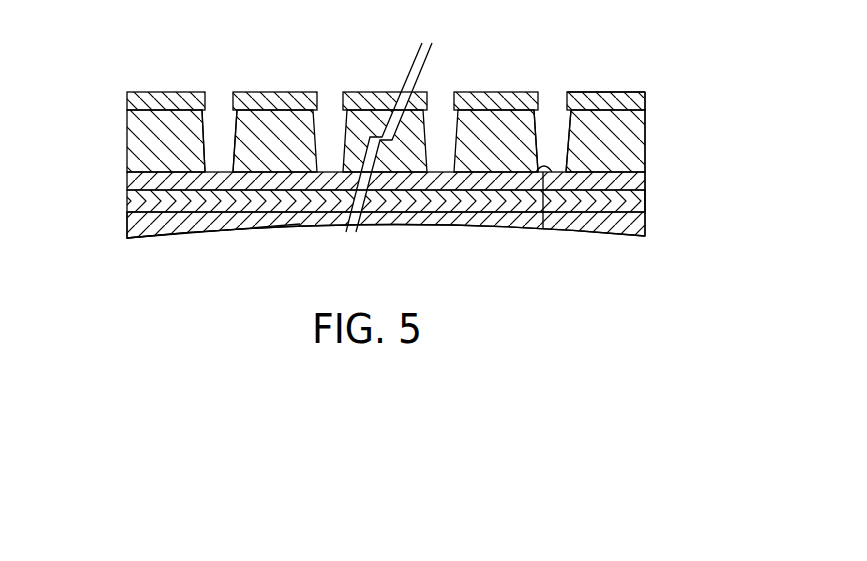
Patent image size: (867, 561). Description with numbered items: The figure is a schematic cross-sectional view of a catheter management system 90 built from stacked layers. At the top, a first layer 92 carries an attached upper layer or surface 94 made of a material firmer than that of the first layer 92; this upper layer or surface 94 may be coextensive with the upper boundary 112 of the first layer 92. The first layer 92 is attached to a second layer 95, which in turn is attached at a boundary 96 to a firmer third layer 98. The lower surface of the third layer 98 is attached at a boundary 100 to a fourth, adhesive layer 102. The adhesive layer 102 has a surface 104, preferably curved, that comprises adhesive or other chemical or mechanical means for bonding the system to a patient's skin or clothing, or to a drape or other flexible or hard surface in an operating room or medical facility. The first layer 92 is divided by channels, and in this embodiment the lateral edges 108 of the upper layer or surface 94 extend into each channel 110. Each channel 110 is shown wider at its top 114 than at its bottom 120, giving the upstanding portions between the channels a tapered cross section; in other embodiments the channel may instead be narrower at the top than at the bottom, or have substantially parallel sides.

The system 90 is at (396, 172).
The first layer 92 is at (645, 152).
The upper layer or surface 94 is at (615, 92).
The second layer 95 is at (127, 185).
The boundary 96 is at (644, 200).
The third layer 98 is at (127, 200).
The boundary 100 is at (643, 235).
The adhesive layer 102 is at (592, 225).
The surface 104 is at (172, 240).
The lateral edges 108 is at (318, 100).
The channel 110 is at (218, 98).
The upper boundary 112 is at (645, 115).
The top 114 is at (553, 100).
The bottom 120 is at (541, 224).